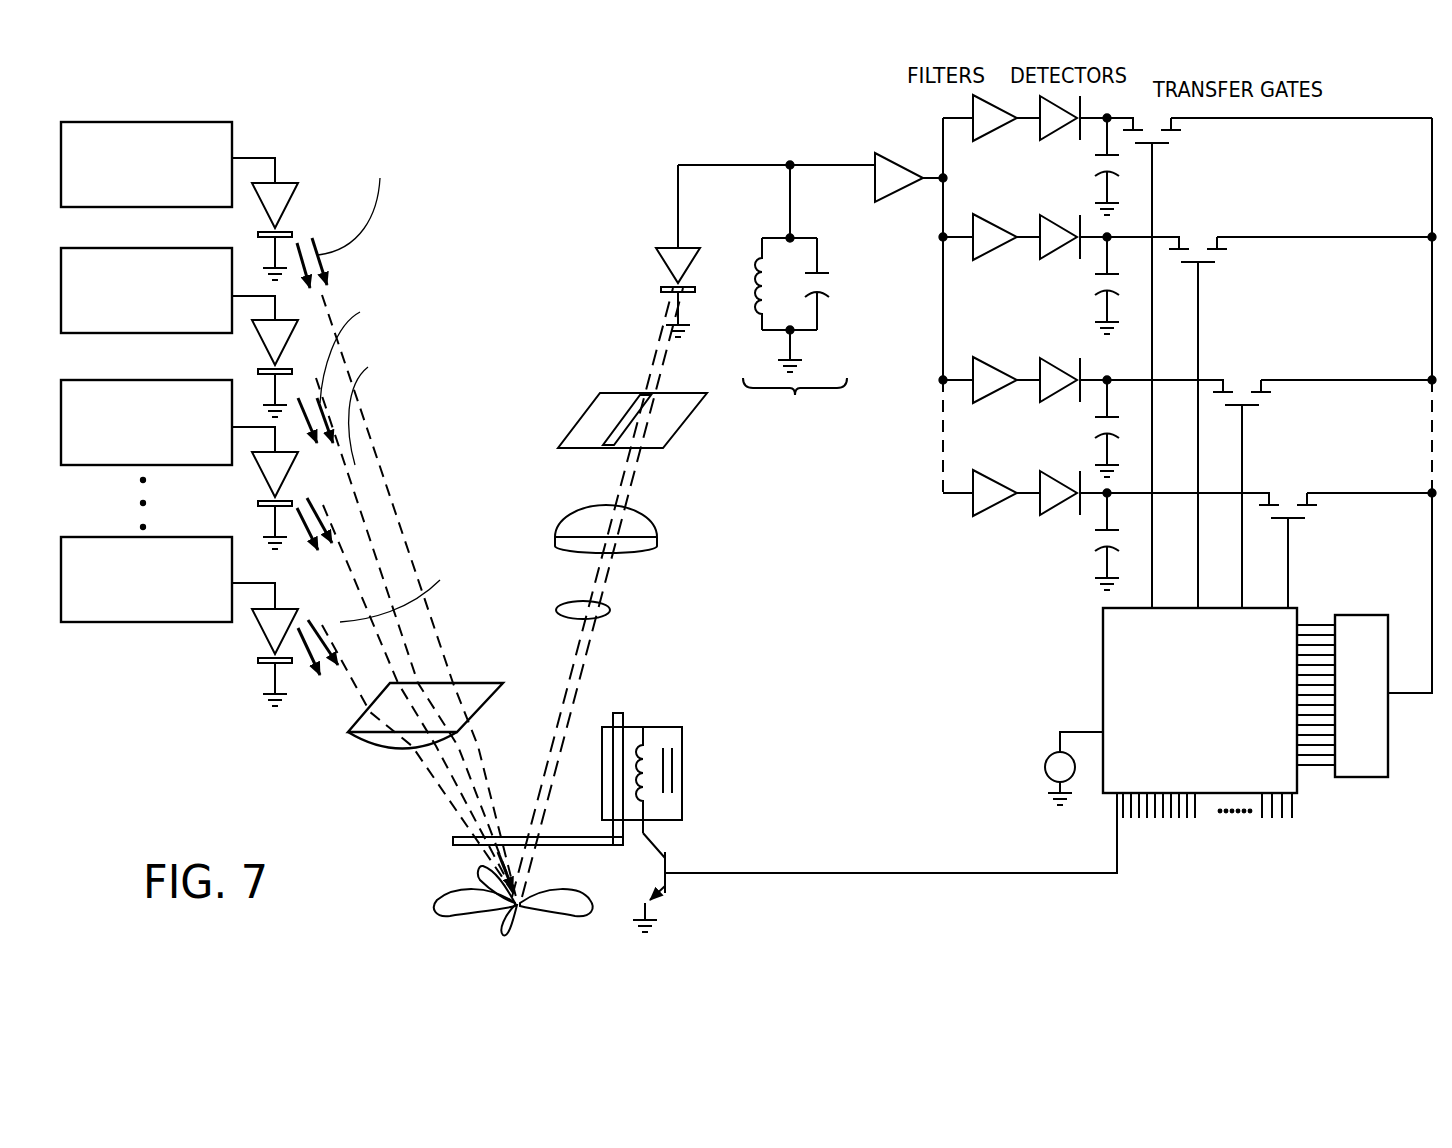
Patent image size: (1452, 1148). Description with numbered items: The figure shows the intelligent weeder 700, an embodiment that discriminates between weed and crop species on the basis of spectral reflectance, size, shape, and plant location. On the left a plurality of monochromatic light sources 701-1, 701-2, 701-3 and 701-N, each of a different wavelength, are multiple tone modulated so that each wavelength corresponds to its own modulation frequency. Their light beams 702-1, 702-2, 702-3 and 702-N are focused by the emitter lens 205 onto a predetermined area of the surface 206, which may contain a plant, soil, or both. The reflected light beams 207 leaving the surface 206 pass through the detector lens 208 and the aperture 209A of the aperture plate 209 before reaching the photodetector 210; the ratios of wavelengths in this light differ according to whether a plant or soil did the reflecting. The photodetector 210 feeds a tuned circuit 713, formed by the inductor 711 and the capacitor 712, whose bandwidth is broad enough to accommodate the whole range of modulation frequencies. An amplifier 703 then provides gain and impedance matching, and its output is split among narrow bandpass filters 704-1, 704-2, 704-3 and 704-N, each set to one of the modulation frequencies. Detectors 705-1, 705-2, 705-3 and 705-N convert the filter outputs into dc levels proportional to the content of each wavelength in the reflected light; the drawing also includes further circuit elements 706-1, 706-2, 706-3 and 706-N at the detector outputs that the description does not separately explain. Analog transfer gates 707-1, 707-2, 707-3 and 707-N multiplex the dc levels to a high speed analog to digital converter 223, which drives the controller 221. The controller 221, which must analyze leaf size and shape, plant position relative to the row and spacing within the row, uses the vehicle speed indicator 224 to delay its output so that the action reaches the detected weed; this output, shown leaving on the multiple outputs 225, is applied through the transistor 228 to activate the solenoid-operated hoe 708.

The intelligent weeder 700 is at (228, 752).
The monochromatic light source 701-1 is at (232, 144).
The monochromatic light source 701-2 is at (170, 248).
The monochromatic light source 701-3 is at (170, 380).
The monochromatic light source 701-N is at (185, 623).
The light beam 702-1 is at (373, 453).
The light beam 702-2 is at (357, 527).
The light beam 702-3 is at (353, 600).
The light beam 702-N is at (352, 678).
The emitter lens 205 is at (462, 683).
The surface 206 is at (530, 892).
The reflected light beams 207 is at (608, 612).
The detector lens 208 is at (657, 522).
The aperture plate 209 is at (640, 452).
The aperture 209A is at (612, 430).
The photodetector 210 is at (670, 243).
The inductor 711 is at (755, 295).
The capacitor 712 is at (820, 298).
The tuned circuit 713 is at (800, 306).
The amplifier 703 is at (889, 192).
The narrow bandpass filter 704-1 is at (1008, 150).
The narrow bandpass filter 704-2 is at (990, 257).
The narrow bandpass filter 704-3 is at (988, 396).
The narrow bandpass filter 704-N is at (988, 509).
The detector 705-1 is at (1050, 136).
The detector 705-2 is at (1060, 212).
The detector 705-3 is at (1066, 357).
The detector 705-N is at (1062, 470).
The capacitor 706-1 is at (1120, 172).
The capacitor 706-2 is at (1120, 290).
The capacitor 706-3 is at (1118, 436).
The capacitor 706-N is at (1093, 548).
The analog transfer gate 707-1 is at (1269, 363).
The analog transfer gate 707-2 is at (1269, 422).
The analog transfer gate 707-3 is at (1269, 494).
The analog transfer gate 707-N is at (1269, 550).
The solenoid-operated hoe 708 is at (621, 779).
The controller 221 is at (1210, 719).
The analog to digital converter 223 is at (1379, 682).
The vehicle speed indicator 224 is at (1048, 788).
The multiple outputs 225 is at (1275, 859).
The transistor 228 is at (875, 862).